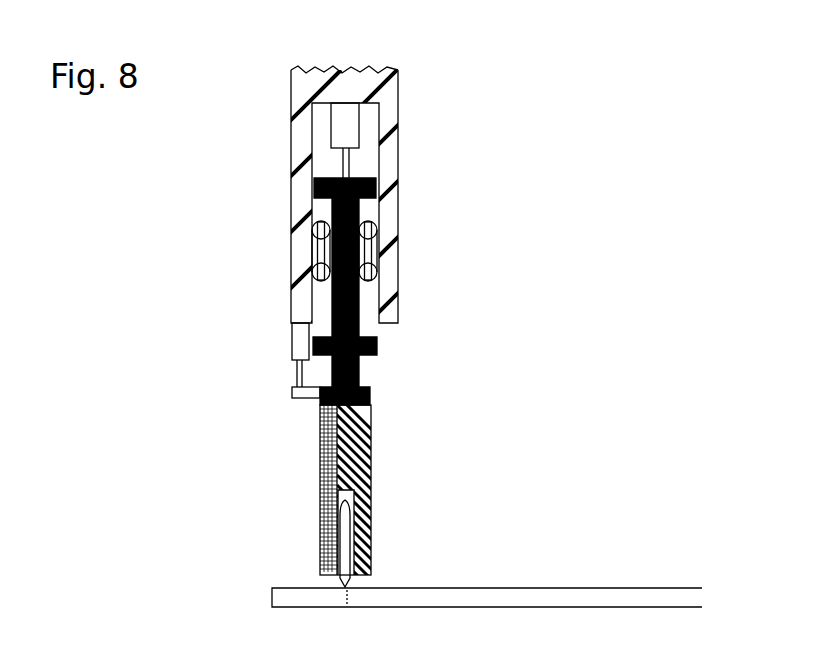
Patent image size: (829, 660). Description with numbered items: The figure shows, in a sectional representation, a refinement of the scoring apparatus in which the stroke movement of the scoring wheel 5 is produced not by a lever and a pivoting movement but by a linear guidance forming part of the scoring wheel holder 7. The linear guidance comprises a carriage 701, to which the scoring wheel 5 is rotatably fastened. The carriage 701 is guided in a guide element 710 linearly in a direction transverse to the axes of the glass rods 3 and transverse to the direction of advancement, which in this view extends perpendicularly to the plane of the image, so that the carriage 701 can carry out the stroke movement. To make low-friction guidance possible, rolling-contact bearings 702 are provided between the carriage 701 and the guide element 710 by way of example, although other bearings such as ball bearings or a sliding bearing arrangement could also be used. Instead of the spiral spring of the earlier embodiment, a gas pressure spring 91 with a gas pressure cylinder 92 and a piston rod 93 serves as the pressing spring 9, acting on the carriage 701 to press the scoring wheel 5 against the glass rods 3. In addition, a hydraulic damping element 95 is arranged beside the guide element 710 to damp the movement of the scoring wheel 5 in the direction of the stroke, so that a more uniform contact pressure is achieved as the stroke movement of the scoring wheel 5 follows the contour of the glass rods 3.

The glass rods 3 is at (683, 594).
The scoring wheel 5 is at (350, 585).
The scoring wheel holder 7 is at (412, 463).
The pressing spring 9 is at (321, 125).
The gas pressure spring 91 is at (321, 125).
The gas pressure cylinder 92 is at (331, 126).
The piston rod 93 is at (352, 150).
The hydraulic damping element 95 is at (292, 340).
The carriage 701 is at (360, 372).
The rolling-contact bearings 702 is at (377, 246).
The guide element 710 is at (292, 237).